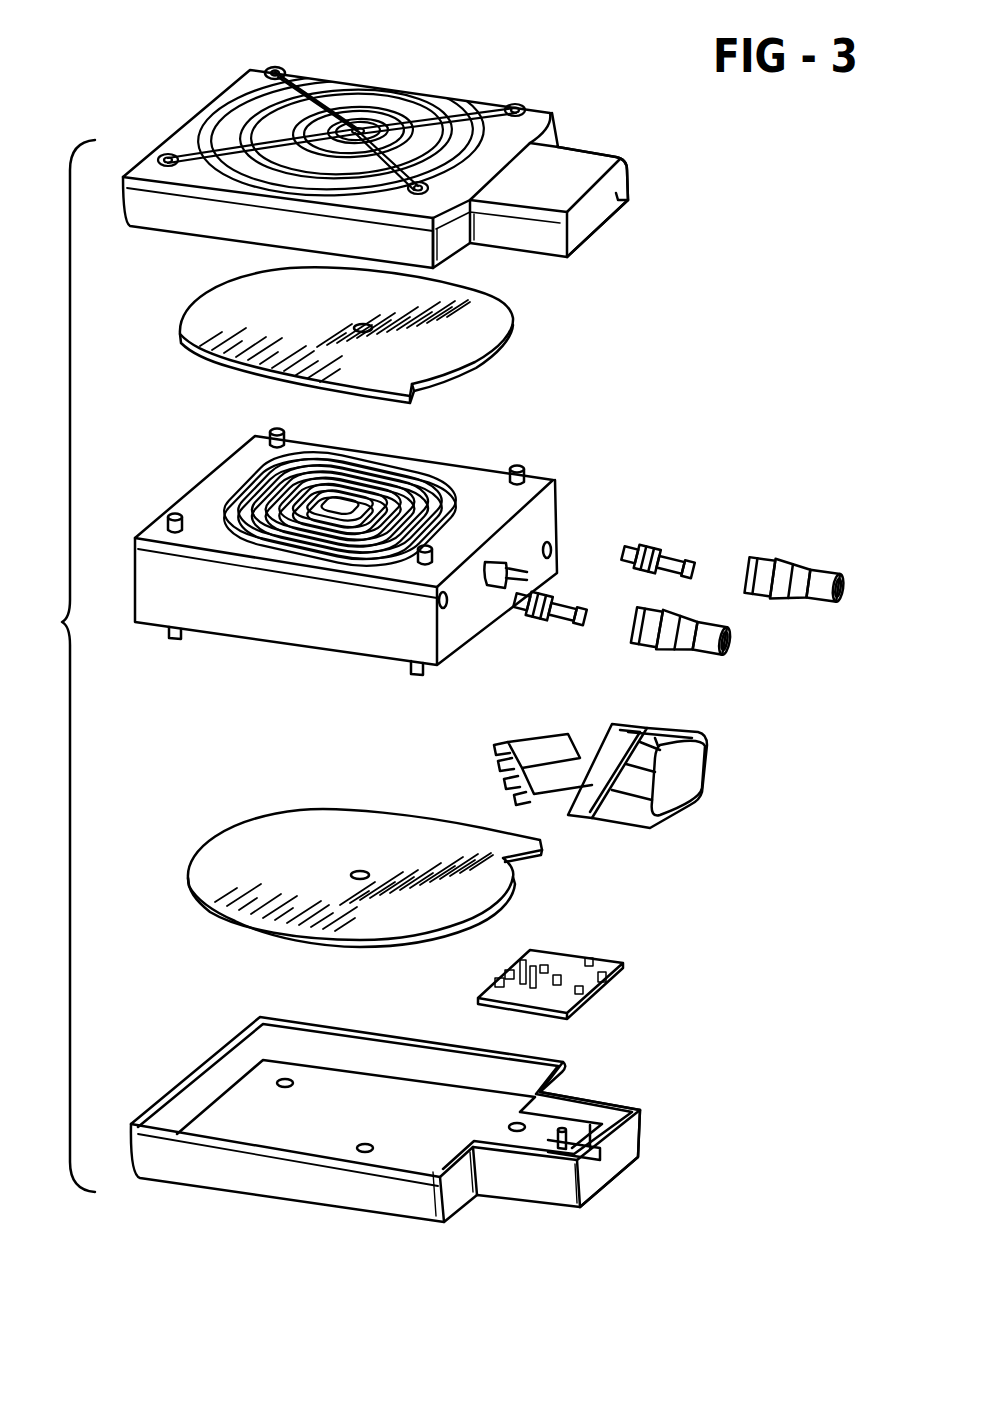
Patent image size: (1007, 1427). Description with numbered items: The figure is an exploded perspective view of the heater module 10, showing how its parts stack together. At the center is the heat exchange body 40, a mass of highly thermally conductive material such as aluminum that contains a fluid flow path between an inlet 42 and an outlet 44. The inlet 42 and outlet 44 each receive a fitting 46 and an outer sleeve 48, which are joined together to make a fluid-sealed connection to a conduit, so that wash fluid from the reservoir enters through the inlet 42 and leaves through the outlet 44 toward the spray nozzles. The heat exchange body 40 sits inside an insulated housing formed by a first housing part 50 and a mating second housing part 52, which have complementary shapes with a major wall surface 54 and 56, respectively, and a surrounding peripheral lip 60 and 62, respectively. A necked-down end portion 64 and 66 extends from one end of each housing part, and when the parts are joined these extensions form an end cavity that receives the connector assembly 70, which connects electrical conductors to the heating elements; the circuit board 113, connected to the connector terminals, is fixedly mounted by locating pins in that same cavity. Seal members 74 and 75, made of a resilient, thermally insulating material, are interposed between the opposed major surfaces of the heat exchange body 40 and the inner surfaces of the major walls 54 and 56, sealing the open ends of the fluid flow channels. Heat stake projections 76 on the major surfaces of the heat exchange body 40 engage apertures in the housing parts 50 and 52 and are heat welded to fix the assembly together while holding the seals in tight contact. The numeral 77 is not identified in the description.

The heater module 10 is at (61, 666).
The heat exchange body 40 is at (386, 569).
The inlet 42 is at (450, 615).
The outlet 44 is at (556, 548).
The fitting 46 is at (678, 555).
The outer sleeve 48 is at (792, 566).
The first housing part 50 is at (430, 156).
The second housing part 52 is at (402, 1137).
The major wall surface 54 is at (360, 128).
The major wall surface 56 is at (410, 1098).
The peripheral lip 60 is at (200, 227).
The peripheral lip 62 is at (182, 1180).
The necked-down end portion 64 is at (622, 149).
The necked-down end portion 66 is at (600, 1100).
The connector assembly 70 is at (710, 773).
The seal member 74 is at (514, 312).
The seal member 75 is at (310, 818).
The projections 76 is at (272, 433).
The mounting holes 77 is at (274, 70).
The circuit board 113 is at (615, 962).